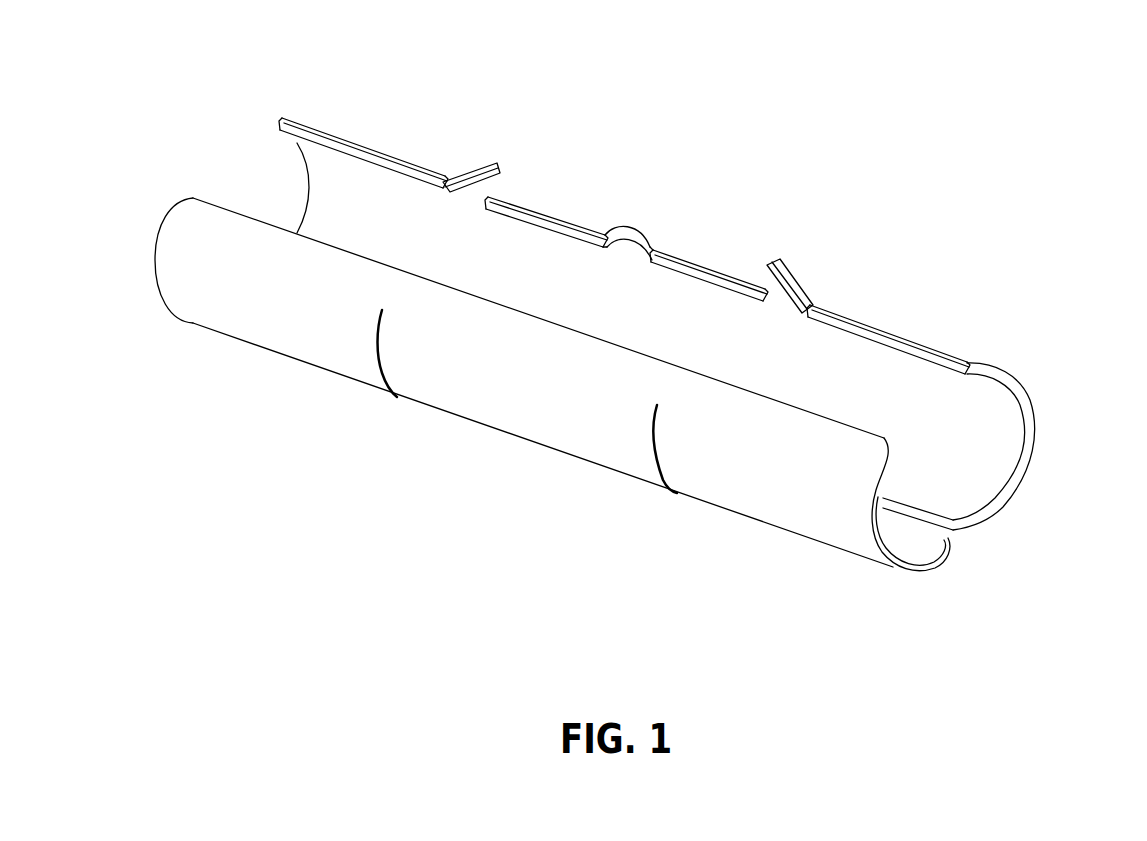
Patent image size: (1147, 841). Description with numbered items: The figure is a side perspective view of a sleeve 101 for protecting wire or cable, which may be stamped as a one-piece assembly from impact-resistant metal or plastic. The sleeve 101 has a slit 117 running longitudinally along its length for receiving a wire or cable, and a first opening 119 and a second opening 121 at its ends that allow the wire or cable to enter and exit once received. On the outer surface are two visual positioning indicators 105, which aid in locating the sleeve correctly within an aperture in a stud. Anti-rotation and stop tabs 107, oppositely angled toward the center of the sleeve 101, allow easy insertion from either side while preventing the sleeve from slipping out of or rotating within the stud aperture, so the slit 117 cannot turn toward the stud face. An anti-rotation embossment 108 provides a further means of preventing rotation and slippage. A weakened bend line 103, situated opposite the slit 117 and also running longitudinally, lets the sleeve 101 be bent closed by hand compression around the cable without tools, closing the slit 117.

The sleeve 101 is at (540, 396).
The weakened bend line 103 is at (967, 540).
The visual positioning indicators 105 is at (377, 358).
The anti-rotation and stop tabs 107 is at (500, 170).
The anti-rotation embossment 108 is at (650, 237).
The slit 117 is at (188, 163).
The first opening 119 is at (320, 215).
The second opening 121 is at (1008, 444).